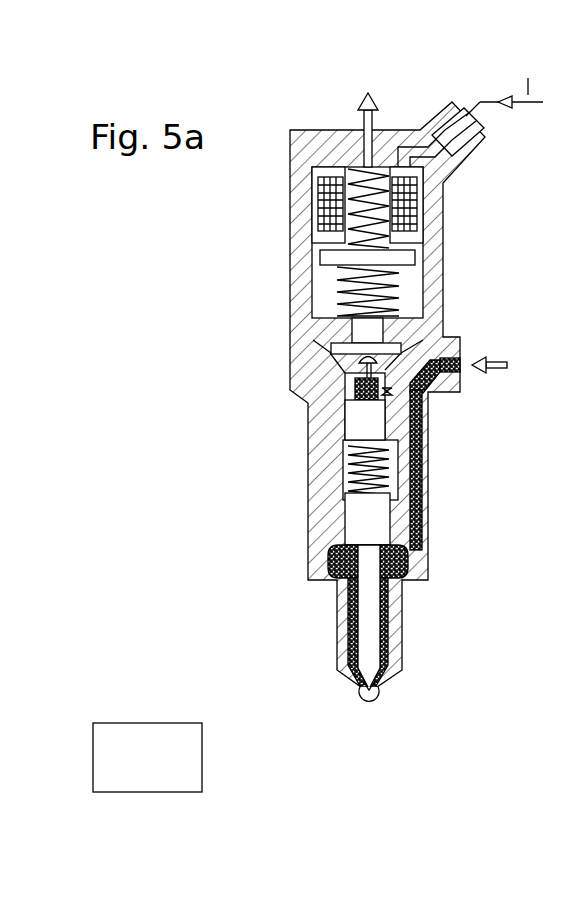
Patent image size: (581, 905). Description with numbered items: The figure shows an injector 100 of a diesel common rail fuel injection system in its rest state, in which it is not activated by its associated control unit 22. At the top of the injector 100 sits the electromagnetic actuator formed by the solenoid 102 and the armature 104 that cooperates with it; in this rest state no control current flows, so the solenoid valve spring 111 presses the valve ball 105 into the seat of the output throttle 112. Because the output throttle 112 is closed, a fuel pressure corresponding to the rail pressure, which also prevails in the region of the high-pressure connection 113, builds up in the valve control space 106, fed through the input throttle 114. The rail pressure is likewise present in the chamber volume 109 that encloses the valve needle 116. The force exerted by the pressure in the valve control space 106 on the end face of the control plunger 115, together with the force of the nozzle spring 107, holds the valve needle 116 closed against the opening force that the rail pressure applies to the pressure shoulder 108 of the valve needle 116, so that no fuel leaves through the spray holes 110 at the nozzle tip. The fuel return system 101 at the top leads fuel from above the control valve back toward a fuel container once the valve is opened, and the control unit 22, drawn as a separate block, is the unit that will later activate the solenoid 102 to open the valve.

The injector 100 is at (265, 97).
The fuel return system 101 is at (380, 97).
The solenoid 102 is at (325, 207).
The solenoid valve spring 111 is at (405, 207).
The armature 104 is at (347, 282).
The valve ball 105 is at (364, 362).
The output throttle 112 is at (360, 374).
The valve control space 106 is at (348, 416).
The nozzle spring 107 is at (380, 457).
The control plunger 115 is at (383, 475).
The high-pressure connection 113 is at (462, 366).
The input throttle 114 is at (404, 409).
The pressure shoulder 108 is at (377, 556).
The chamber volume 109 is at (348, 618).
The valve needle 116 is at (373, 628).
The spray holes 110 is at (380, 697).
The control unit 22 is at (197, 761).